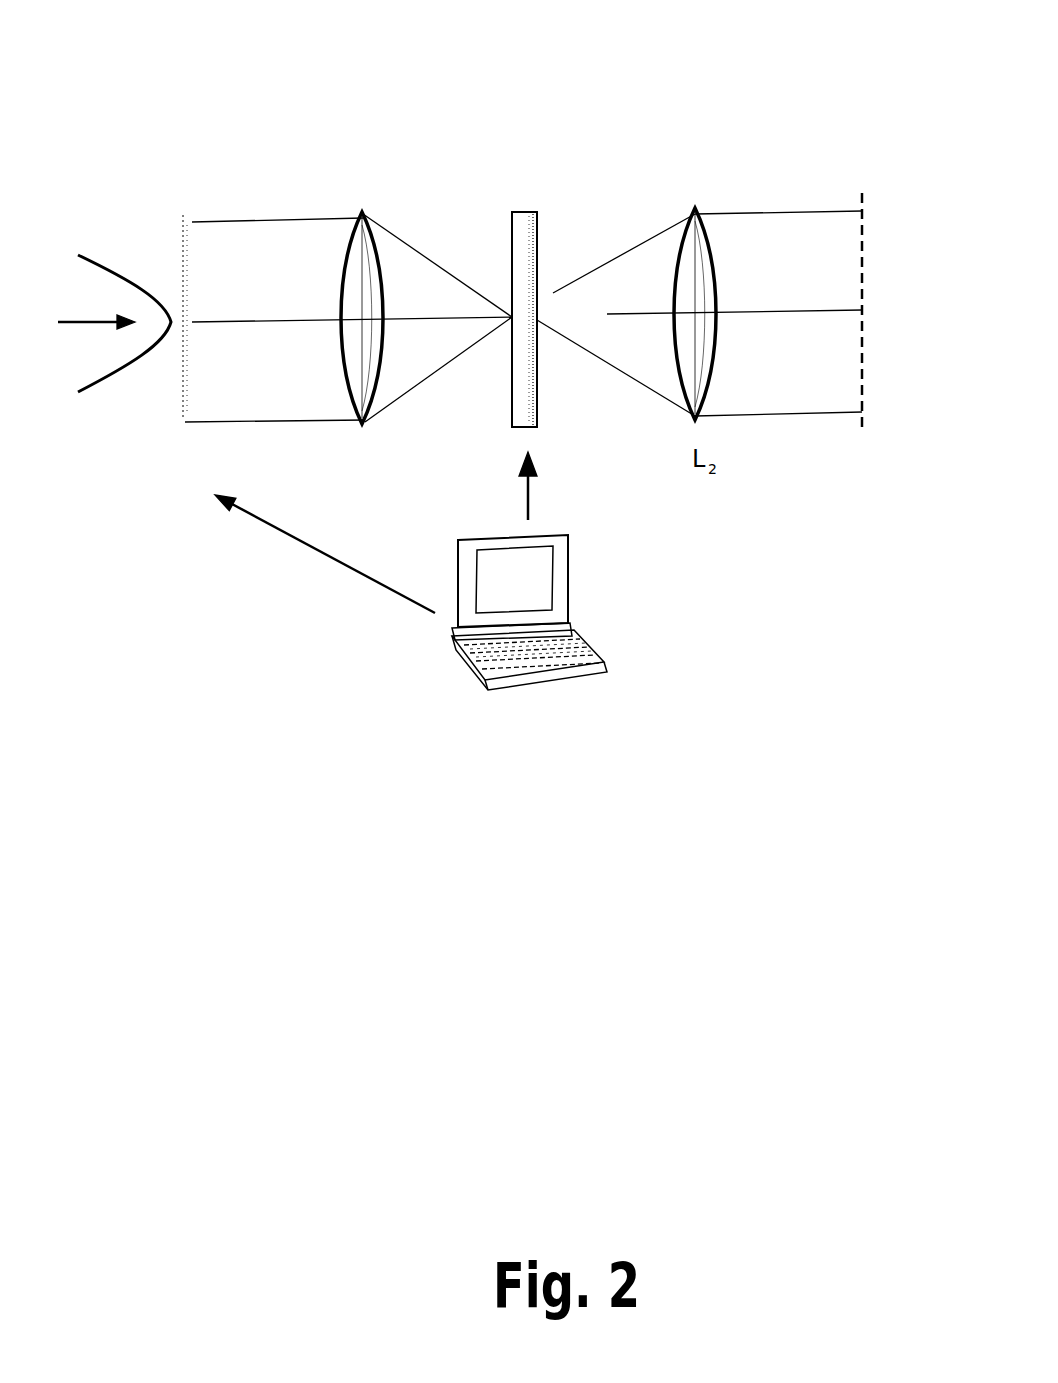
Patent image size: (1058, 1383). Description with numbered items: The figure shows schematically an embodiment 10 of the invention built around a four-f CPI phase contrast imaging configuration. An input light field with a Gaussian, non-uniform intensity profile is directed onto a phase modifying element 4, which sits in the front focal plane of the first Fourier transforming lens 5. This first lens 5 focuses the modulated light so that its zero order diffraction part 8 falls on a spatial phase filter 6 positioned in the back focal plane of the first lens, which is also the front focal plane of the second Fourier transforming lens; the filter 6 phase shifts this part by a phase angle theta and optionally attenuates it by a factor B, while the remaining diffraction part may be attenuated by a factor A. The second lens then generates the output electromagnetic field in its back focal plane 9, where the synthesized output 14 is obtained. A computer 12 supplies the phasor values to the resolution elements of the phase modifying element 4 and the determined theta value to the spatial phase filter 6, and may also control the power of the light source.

The phase modifying element 4 is at (183, 160).
The first Fourier lens L1 5 is at (365, 203).
The spatial phase filter 6 is at (540, 413).
The zero order diffraction part 8 is at (443, 293).
The back focal plane of lens L2 9 is at (863, 157).
The embodiment 10 is at (538, 120).
The computer 12 is at (537, 697).
The output light pattern 14 is at (878, 390).